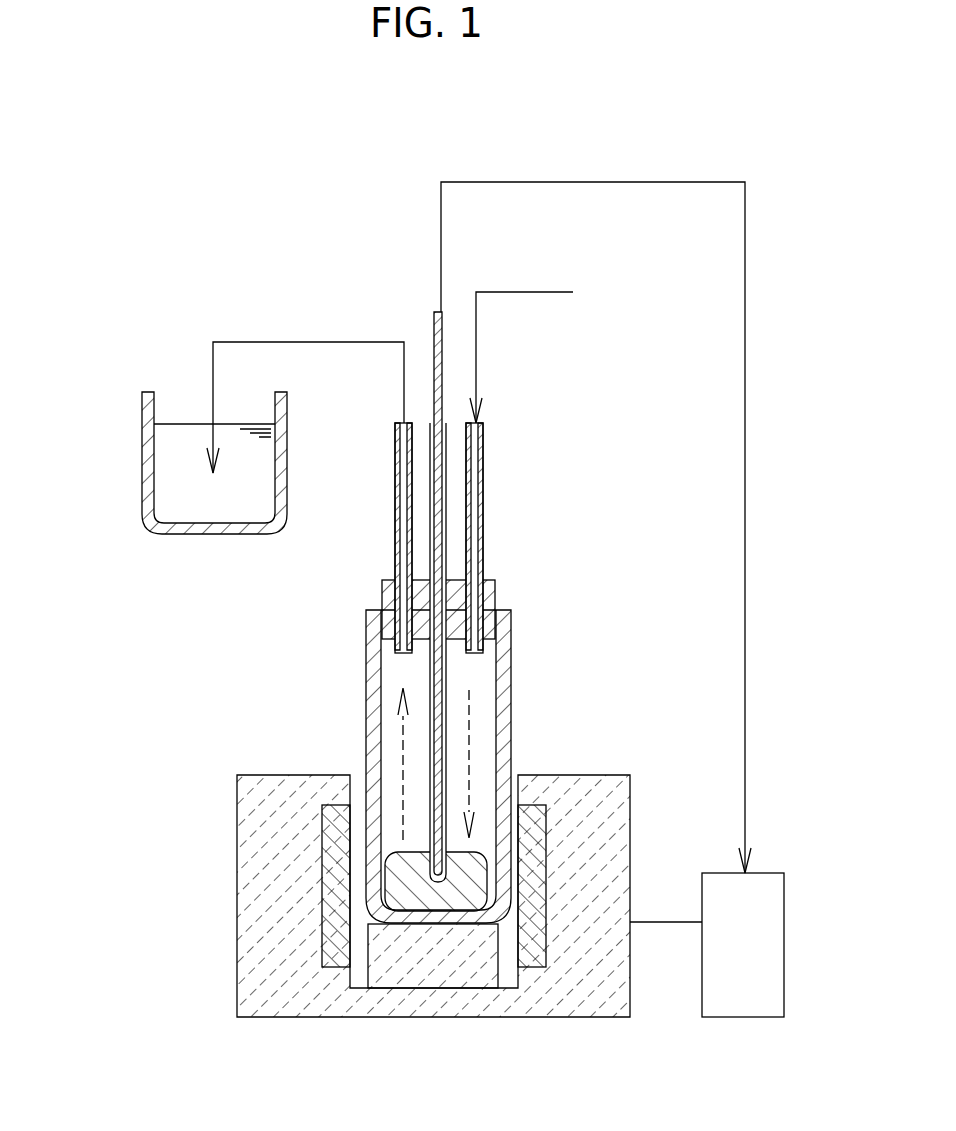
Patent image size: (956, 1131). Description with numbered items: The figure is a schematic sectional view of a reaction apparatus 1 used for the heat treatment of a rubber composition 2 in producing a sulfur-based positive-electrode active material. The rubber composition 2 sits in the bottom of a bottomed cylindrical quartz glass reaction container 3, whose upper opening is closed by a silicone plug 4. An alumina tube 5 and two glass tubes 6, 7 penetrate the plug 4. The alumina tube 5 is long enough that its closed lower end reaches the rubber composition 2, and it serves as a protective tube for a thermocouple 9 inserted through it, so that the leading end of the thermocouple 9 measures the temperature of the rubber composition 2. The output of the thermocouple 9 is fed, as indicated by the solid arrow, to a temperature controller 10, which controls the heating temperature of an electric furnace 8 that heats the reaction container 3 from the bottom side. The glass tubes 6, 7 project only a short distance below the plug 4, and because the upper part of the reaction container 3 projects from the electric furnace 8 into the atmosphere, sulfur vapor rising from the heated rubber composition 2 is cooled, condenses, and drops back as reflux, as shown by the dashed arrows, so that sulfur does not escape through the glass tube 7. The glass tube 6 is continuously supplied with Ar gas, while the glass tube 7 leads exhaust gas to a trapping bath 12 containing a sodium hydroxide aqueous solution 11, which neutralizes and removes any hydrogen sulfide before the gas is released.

The reaction apparatus 1 is at (245, 210).
The rubber composition 2 is at (453, 890).
The reaction container 3 is at (506, 657).
The silicone plug 4 is at (490, 590).
The alumina tube 5 is at (446, 735).
The glass tube 6 is at (484, 480).
The glass tube 7 is at (396, 540).
The electric furnace 8 is at (247, 892).
The thermocouple 9 is at (440, 336).
The temperature controller 10 is at (740, 1008).
The sodium hydroxide aqueous solution 11 is at (200, 510).
The trapping bath 12 is at (143, 477).